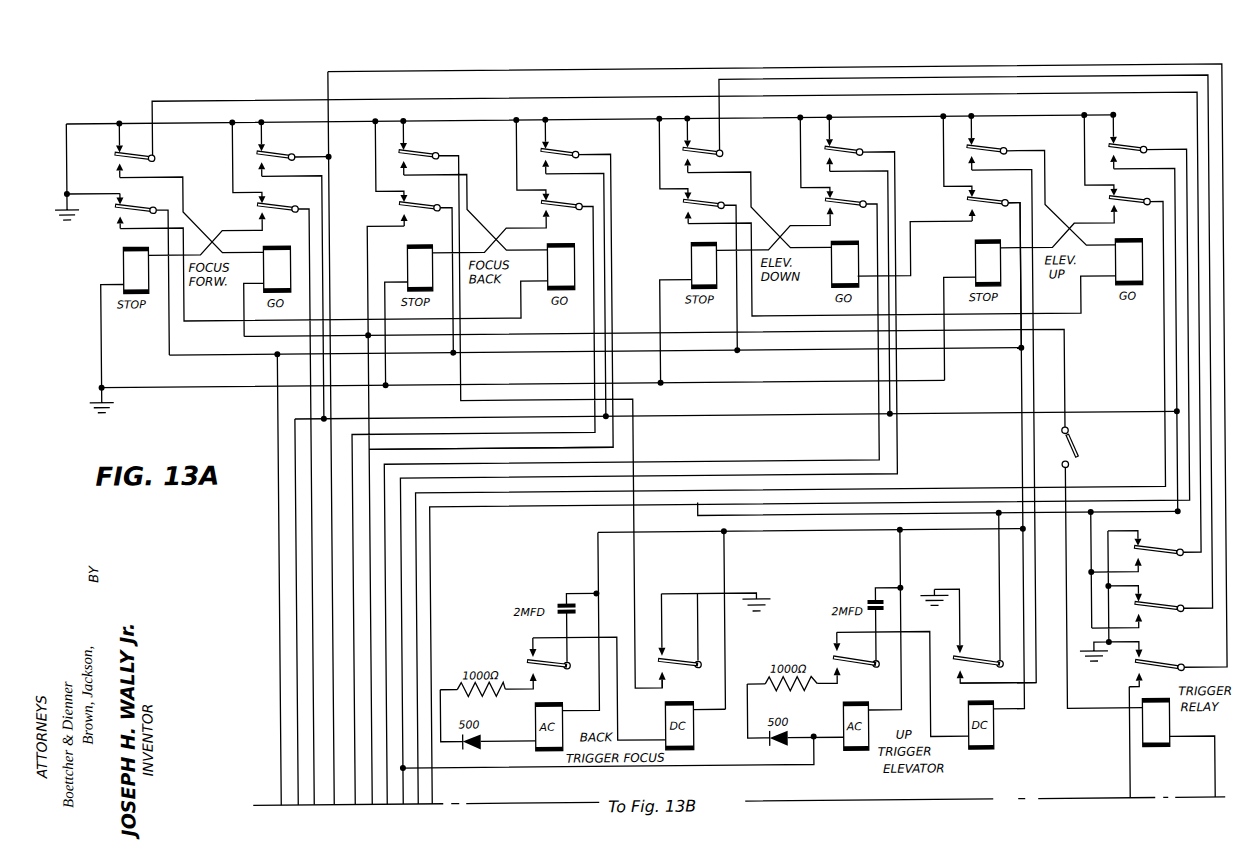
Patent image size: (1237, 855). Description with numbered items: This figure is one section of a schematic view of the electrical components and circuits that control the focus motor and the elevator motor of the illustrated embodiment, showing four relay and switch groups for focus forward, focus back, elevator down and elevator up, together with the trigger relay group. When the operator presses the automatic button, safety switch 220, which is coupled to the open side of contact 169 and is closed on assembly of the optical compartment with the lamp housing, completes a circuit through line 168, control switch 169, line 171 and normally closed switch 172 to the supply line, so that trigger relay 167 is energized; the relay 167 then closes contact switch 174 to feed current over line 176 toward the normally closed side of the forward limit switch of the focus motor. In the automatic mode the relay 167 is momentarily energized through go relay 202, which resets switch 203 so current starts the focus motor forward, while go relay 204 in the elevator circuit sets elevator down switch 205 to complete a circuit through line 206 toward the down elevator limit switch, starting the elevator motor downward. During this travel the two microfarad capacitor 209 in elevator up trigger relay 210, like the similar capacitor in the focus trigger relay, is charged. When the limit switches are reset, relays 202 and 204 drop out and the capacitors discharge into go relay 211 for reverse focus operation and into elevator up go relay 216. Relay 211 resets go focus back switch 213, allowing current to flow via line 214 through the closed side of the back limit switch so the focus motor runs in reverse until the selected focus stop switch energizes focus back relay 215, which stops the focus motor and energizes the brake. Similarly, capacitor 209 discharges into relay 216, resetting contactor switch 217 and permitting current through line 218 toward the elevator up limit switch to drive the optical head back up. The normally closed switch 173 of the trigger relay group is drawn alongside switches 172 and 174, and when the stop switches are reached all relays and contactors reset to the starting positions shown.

The trigger relay 167 is at (1142, 729).
The line 168 is at (670, 335).
The control switch 169 is at (160, 157).
The line 171 is at (602, 97).
The normally closed switch 172 is at (1161, 560).
The trigger relay contact 173 is at (1162, 616).
The contact switch 174 is at (1166, 676).
The line 176 is at (1062, 61).
The go relay 202 is at (268, 247).
The switch 203 is at (276, 151).
The go relay 204 is at (818, 275).
The elevator down switch 205 is at (868, 140).
The line 206 is at (791, 416).
The capacitor 209 is at (565, 599).
The elevator up trigger relay 210 is at (866, 602).
The go relay 211 is at (600, 266).
The go focus back switch 213 is at (581, 145).
The line 214 is at (617, 441).
The focus back relay 215 is at (400, 264).
The elevator up go relay 216 is at (1109, 288).
The contactor switch 217 is at (1143, 136).
The line 218 is at (1189, 380).
The safety switch 220 is at (1080, 452).